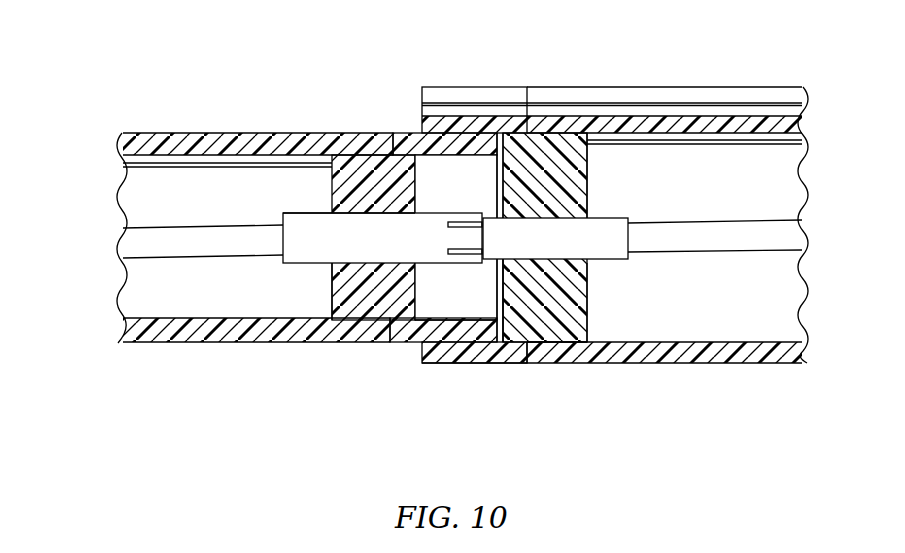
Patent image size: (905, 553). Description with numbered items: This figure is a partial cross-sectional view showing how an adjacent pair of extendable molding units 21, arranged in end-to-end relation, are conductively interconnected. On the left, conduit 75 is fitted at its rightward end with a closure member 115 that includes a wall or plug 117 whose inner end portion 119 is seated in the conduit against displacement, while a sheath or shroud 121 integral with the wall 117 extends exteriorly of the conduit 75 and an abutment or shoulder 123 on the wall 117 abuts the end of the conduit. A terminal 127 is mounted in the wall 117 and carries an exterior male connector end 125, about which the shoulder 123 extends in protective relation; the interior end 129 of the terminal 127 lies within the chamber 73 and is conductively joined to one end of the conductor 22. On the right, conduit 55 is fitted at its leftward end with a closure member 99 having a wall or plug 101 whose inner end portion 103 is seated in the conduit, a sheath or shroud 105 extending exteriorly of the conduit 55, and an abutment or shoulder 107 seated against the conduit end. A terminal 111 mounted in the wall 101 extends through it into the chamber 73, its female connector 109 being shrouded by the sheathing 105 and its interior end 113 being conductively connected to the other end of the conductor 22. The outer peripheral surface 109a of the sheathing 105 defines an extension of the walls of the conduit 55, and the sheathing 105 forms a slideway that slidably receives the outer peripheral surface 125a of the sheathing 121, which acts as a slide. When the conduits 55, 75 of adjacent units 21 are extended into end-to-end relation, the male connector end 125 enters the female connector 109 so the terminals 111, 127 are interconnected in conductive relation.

The extendable molding unit 21 is at (111, 123).
The conductor 22 is at (153, 223).
The chamber 73 is at (145, 283).
The conduit 75 is at (221, 358).
The conduit 55 is at (718, 375).
The closure member 99 is at (469, 379).
The wall or plug 101 is at (555, 300).
The inner end portion 103 is at (587, 327).
The sheath or shroud 105 is at (487, 366).
The abutment or shoulder 107 is at (545, 350).
The female connector 109 is at (512, 242).
The outer peripheral surface of sheathing 109a is at (473, 87).
The terminal 111 is at (604, 250).
The interior end of terminal 113 is at (603, 217).
The closure member 115 is at (411, 117).
The wall or plug 117 is at (357, 185).
The inner end portion 119 is at (340, 295).
The sheath or shroud 121 is at (458, 157).
The abutment or shoulder 123 is at (395, 328).
The male connector end 125 is at (433, 265).
The outer peripheral surface of sheathing 125a is at (448, 342).
The terminal 127 is at (372, 252).
The interior end of terminal 129 is at (305, 213).